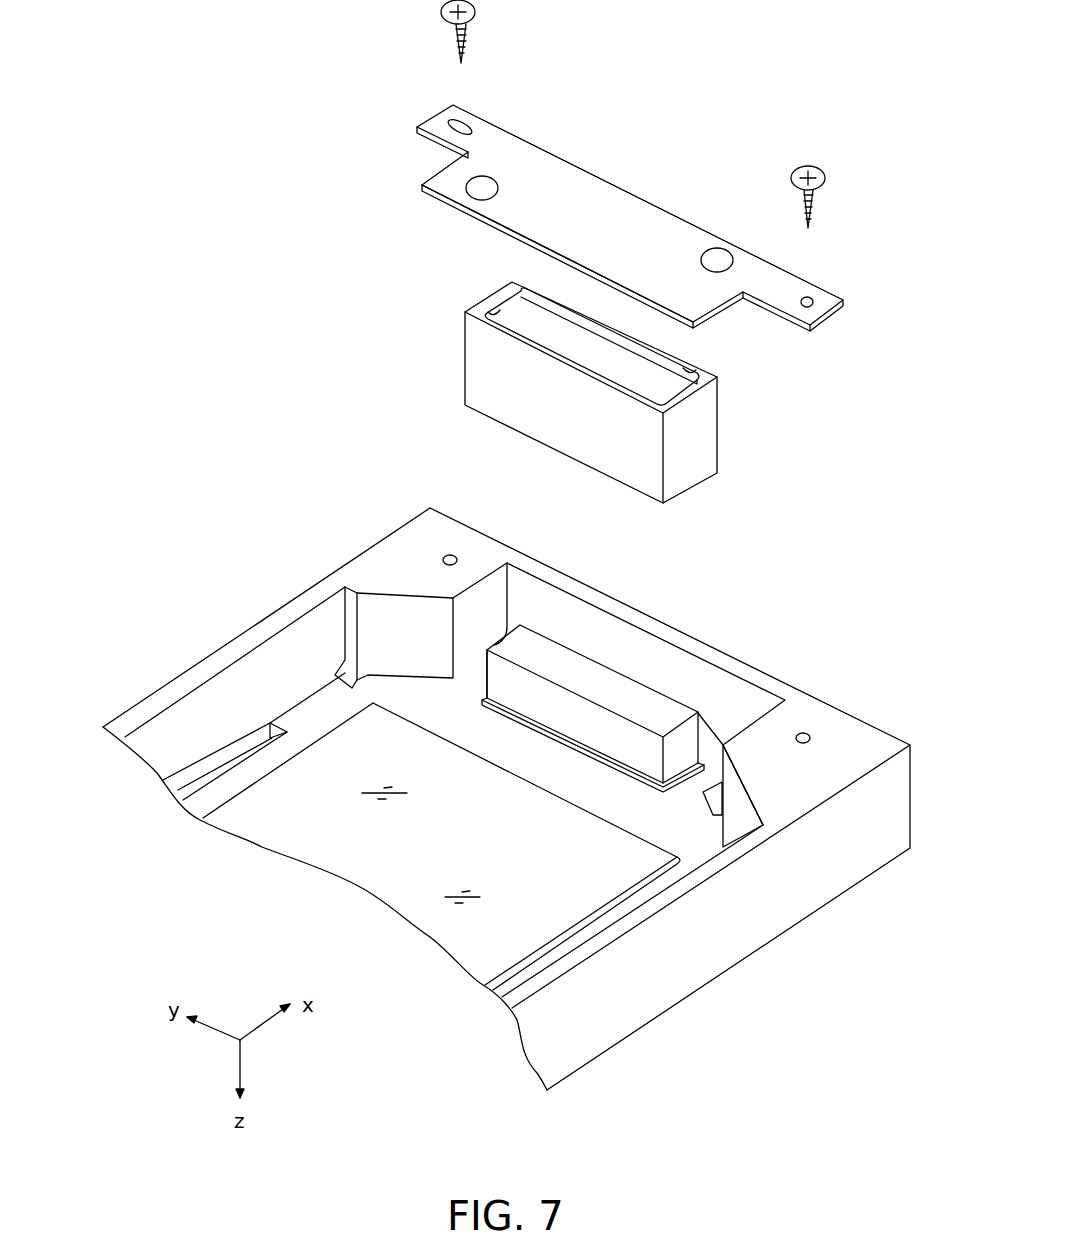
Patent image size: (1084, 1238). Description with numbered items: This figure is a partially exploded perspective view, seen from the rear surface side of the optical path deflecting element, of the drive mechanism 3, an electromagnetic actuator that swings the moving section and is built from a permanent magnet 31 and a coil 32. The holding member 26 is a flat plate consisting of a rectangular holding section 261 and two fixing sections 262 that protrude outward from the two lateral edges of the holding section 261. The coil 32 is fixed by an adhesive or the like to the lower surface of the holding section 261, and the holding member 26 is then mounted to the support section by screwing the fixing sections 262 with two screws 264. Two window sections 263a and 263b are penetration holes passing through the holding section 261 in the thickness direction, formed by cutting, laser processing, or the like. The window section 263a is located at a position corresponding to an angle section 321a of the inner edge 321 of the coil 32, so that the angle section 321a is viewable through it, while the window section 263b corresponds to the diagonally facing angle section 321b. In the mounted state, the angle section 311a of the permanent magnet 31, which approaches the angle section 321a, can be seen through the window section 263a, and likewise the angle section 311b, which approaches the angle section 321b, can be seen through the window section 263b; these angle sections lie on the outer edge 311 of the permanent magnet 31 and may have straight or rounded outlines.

The drive mechanism 3 is at (824, 546).
The holding member 26 is at (600, 165).
The holding section 261 is at (528, 225).
The fixing sections 262 is at (435, 119).
The window section 263a is at (450, 178).
The window section 263b is at (718, 238).
The screws 264 is at (478, 12).
The permanent magnet 31 is at (646, 672).
The outer edge of the permanent magnet 311 is at (560, 645).
The angle section of the permanent magnet 311a is at (507, 563).
The angle section of the permanent magnet 311b is at (700, 712).
The coil 32 is at (730, 455).
The inner edge of the coil 321 is at (530, 340).
The angle section of the inner edge of the coil 321a is at (498, 310).
The angle section of the inner edge of the coil 321b is at (690, 372).